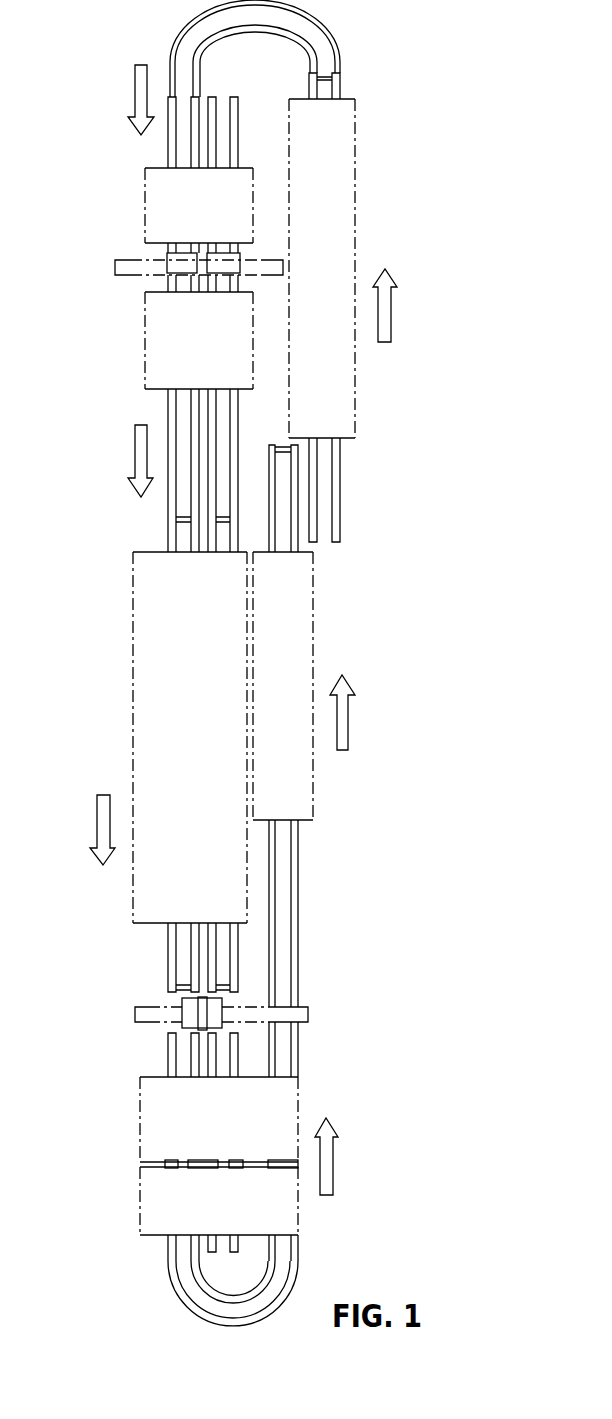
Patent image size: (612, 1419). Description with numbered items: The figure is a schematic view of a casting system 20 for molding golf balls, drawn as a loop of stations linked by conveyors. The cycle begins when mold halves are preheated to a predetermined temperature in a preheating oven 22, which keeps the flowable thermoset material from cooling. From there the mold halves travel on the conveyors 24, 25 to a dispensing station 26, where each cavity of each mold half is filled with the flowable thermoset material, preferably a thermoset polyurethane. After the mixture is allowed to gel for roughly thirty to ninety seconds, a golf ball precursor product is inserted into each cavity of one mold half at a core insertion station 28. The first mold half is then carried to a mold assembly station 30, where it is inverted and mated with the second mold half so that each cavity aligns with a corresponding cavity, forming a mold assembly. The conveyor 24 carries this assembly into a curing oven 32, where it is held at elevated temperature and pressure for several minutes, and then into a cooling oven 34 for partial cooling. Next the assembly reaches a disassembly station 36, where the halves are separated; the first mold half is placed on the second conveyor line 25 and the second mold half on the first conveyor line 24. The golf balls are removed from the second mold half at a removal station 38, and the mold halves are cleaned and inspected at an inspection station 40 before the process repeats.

The casting system 20 is at (285, 663).
The preheating oven 22 is at (137, 663).
The conveyor 24 is at (180, 28).
The conveyor 25 is at (237, 135).
The dispensing station 26 is at (135, 1013).
The core insertion station 28 is at (140, 1100).
The mold assembly station 30 is at (140, 1183).
The curing oven 32 is at (305, 617).
The cooling oven 34 is at (342, 234).
The disassembly station 36 is at (152, 185).
The removal station 38 is at (115, 262).
The inspection station 40 is at (150, 340).